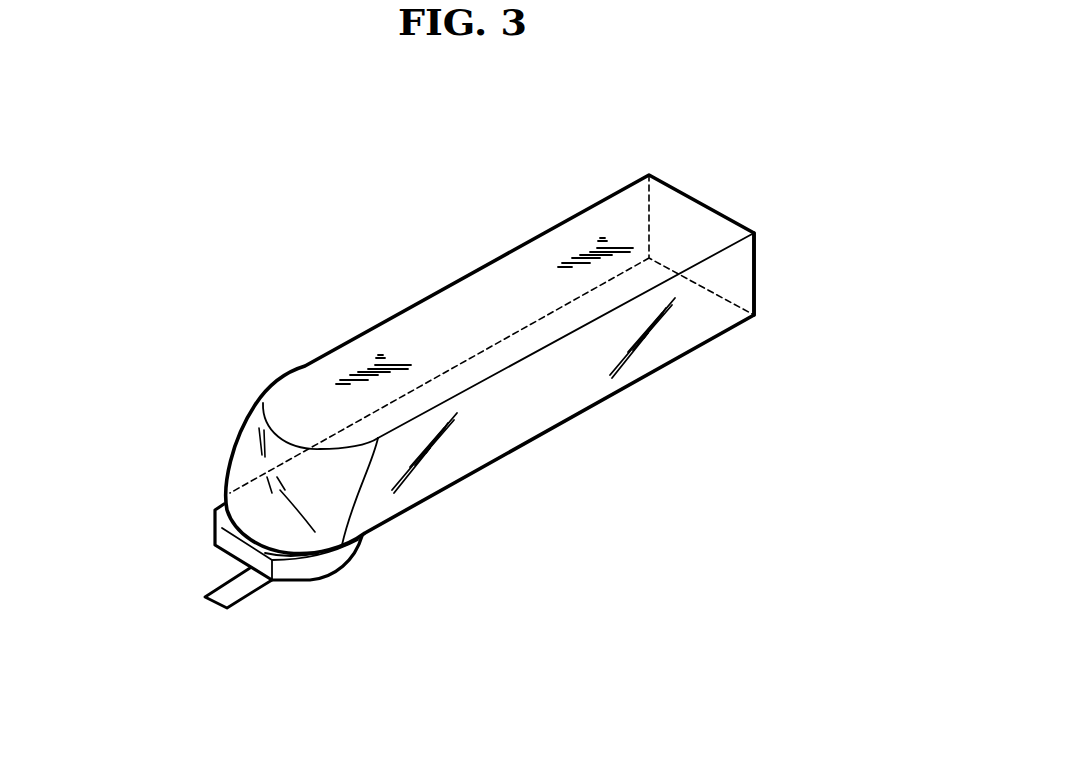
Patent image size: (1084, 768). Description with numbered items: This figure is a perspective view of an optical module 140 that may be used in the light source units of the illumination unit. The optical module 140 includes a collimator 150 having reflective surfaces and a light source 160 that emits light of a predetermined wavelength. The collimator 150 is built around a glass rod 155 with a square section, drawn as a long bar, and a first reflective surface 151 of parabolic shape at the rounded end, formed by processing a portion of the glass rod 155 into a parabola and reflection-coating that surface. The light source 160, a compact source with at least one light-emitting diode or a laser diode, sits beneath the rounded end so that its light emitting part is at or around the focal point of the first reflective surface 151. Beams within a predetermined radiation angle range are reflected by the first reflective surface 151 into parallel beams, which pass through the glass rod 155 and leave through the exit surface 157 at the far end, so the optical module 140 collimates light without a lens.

The optical module 140 is at (410, 241).
The collimator 150 is at (575, 216).
The first reflective surface 151 is at (255, 465).
The glass rod 155 is at (327, 377).
The exit surface 157 is at (698, 232).
The light source 160 is at (322, 583).